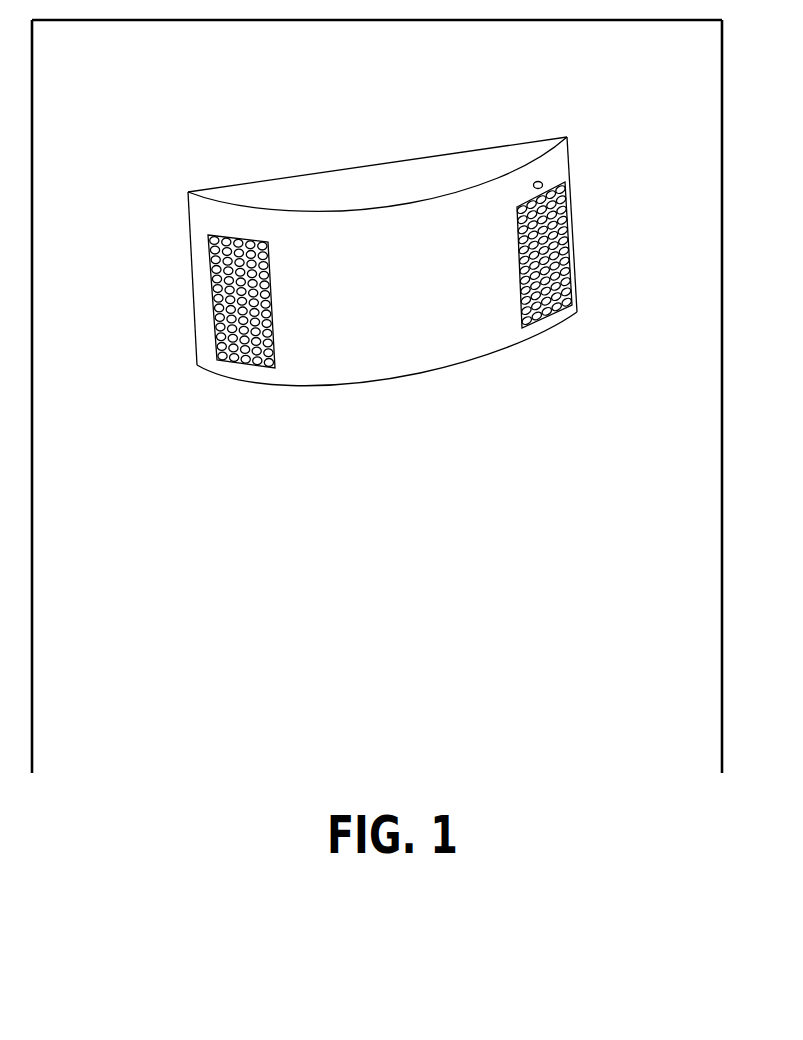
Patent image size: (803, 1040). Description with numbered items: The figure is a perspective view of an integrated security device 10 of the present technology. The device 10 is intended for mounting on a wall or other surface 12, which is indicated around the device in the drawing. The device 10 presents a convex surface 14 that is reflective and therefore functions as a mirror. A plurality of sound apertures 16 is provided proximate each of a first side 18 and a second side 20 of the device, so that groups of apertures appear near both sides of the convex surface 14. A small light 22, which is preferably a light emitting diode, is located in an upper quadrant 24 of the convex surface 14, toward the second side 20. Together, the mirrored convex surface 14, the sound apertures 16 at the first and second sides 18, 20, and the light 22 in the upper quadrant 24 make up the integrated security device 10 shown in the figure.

The integrated security device 10 is at (492, 132).
The wall or other surface 12 is at (681, 89).
The convex surface 14 is at (416, 300).
The sound apertures 16 is at (223, 328).
The first side 18 is at (192, 266).
The second side 20 is at (574, 193).
The small light 22 is at (544, 184).
The upper quadrant 24 is at (568, 162).